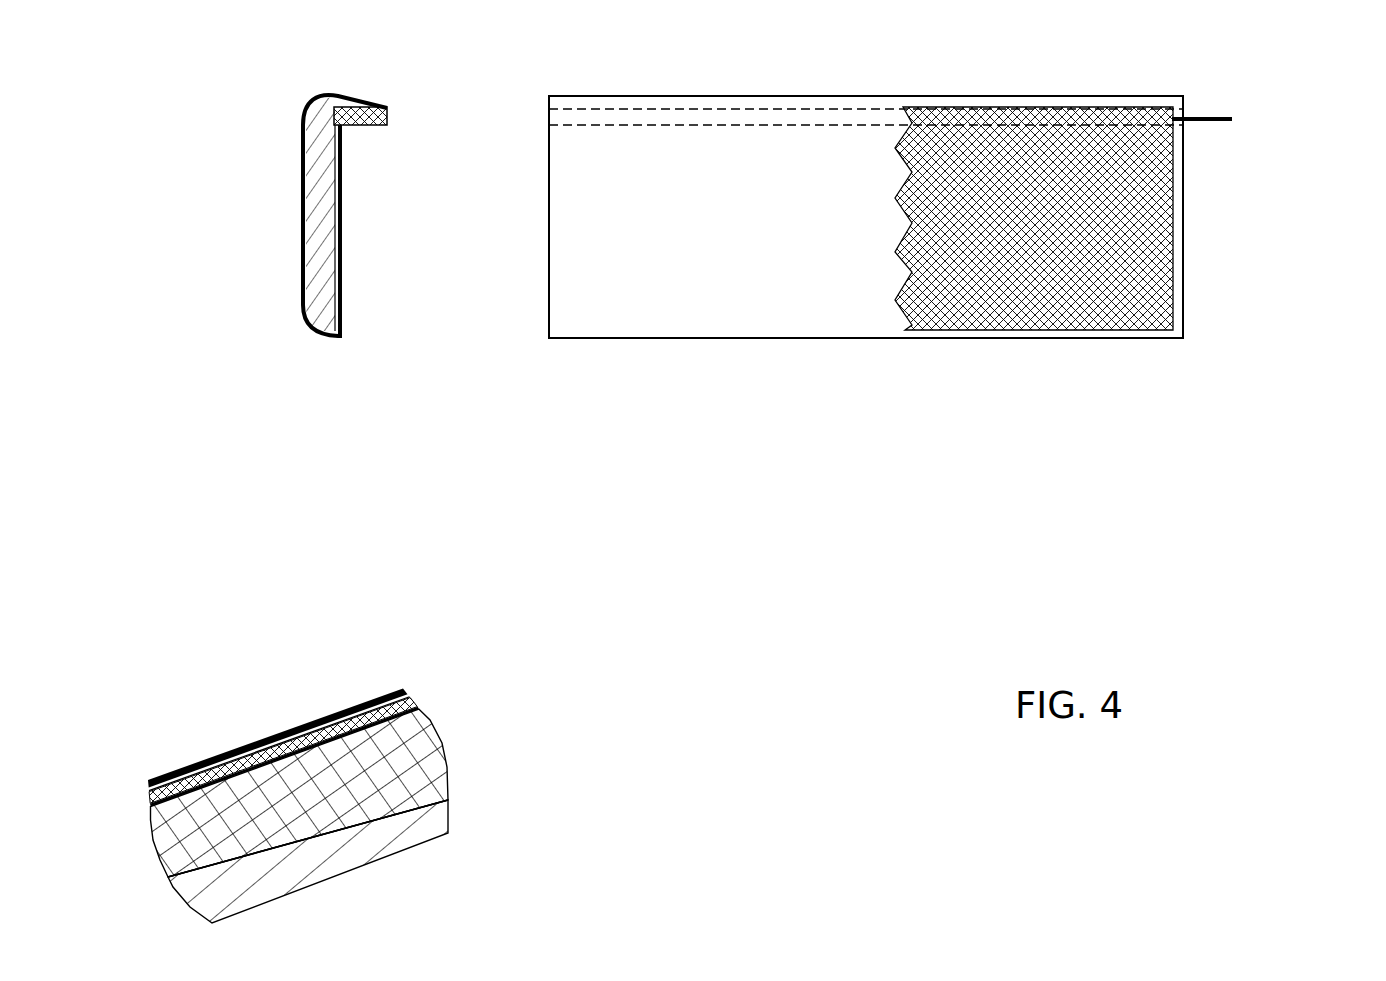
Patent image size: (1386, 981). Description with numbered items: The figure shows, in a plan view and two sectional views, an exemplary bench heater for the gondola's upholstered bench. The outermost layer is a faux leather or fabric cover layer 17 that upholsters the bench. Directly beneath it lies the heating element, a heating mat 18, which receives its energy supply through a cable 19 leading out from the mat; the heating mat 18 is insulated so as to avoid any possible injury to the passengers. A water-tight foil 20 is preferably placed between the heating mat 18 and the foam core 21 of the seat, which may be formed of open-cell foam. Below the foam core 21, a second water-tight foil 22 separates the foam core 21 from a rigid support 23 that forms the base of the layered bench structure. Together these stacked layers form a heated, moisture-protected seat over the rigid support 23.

The cover layer 17 is at (665, 403).
The heating mat 18 is at (634, 455).
The cable 19 is at (1223, 116).
The water-tight foil 20 is at (412, 747).
The foam core 21 is at (739, 486).
The water-tight foil 22 is at (424, 837).
The rigid support 23 is at (413, 524).